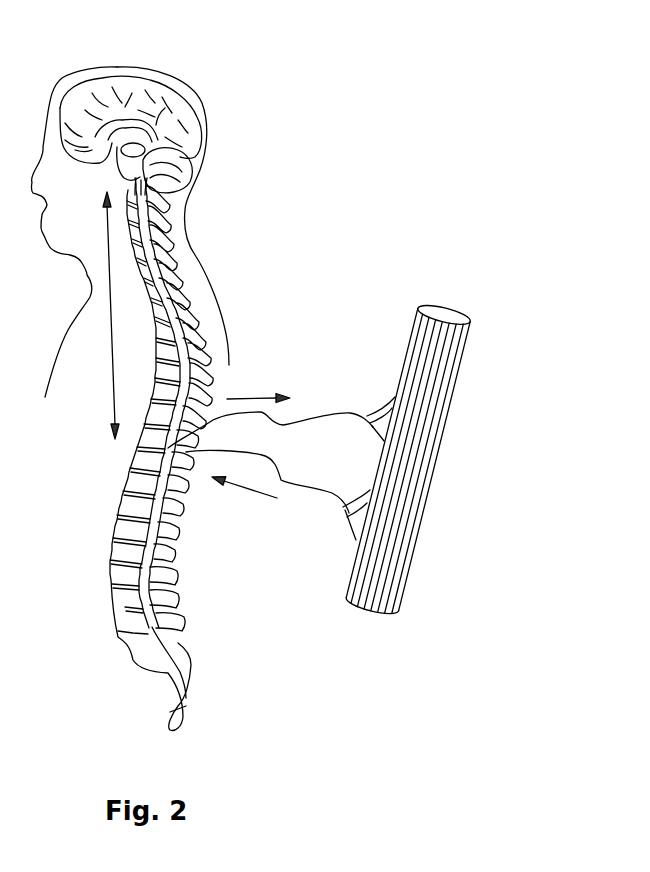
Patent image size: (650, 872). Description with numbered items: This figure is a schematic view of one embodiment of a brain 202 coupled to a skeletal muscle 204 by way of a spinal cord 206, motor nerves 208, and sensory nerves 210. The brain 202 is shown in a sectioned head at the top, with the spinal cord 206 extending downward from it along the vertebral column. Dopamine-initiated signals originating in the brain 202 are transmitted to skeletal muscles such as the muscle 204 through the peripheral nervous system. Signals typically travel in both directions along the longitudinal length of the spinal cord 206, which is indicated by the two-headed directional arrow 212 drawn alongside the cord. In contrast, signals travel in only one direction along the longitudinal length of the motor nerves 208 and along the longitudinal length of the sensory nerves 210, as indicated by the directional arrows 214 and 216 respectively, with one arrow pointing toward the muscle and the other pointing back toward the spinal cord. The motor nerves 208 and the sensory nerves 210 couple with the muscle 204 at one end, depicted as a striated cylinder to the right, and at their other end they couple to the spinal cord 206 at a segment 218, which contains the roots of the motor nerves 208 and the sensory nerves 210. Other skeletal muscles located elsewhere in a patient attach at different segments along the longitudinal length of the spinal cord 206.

The brain 202 is at (120, 90).
The skeletal muscle 204 is at (463, 353).
The spinal cord 206 is at (163, 293).
The motor nerves 208 is at (325, 413).
The sensory nerves 210 is at (307, 487).
The two-headed directional arrow 212 is at (113, 390).
The directional arrow 214 is at (250, 397).
The directional arrow 216 is at (243, 490).
The segment 218 is at (167, 455).